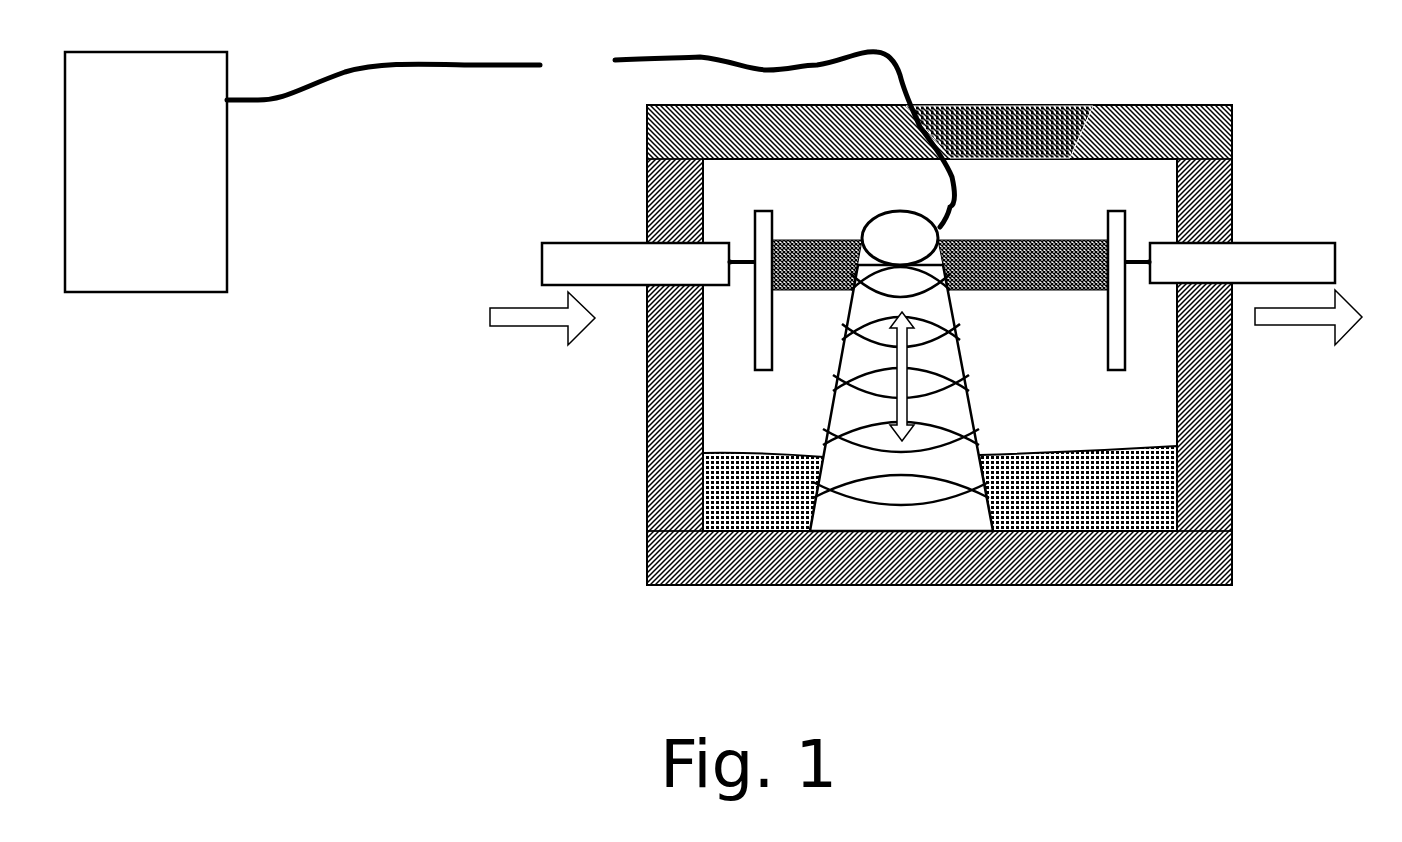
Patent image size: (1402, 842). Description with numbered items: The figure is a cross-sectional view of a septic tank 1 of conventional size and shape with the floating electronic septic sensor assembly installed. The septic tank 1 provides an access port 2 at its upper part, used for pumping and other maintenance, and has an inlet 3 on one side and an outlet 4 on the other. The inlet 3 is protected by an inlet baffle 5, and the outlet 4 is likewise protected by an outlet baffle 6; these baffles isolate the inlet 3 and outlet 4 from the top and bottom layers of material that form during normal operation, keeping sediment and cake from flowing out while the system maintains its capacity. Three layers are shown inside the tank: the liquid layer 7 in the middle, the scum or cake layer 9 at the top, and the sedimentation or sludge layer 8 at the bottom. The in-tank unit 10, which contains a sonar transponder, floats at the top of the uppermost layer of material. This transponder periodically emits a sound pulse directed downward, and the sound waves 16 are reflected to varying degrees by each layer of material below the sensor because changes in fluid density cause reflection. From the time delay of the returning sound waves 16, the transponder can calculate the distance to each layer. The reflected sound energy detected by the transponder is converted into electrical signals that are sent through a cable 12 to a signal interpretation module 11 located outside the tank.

The septic tank 1 is at (628, 121).
The access port 2 is at (999, 132).
The inlet 3 is at (609, 269).
The outlet 4 is at (1256, 268).
The inlet baffle 5 is at (735, 369).
The outlet baffle 6 is at (1130, 398).
The liquid layer 7 is at (940, 345).
The sedimentation layer 8 is at (940, 488).
The cake layer 9 is at (940, 265).
The in-tank unit 10 is at (900, 238).
The signal interpretation module 11 is at (146, 172).
The cable 12 is at (590, 139).
The sound waves 16 is at (885, 505).